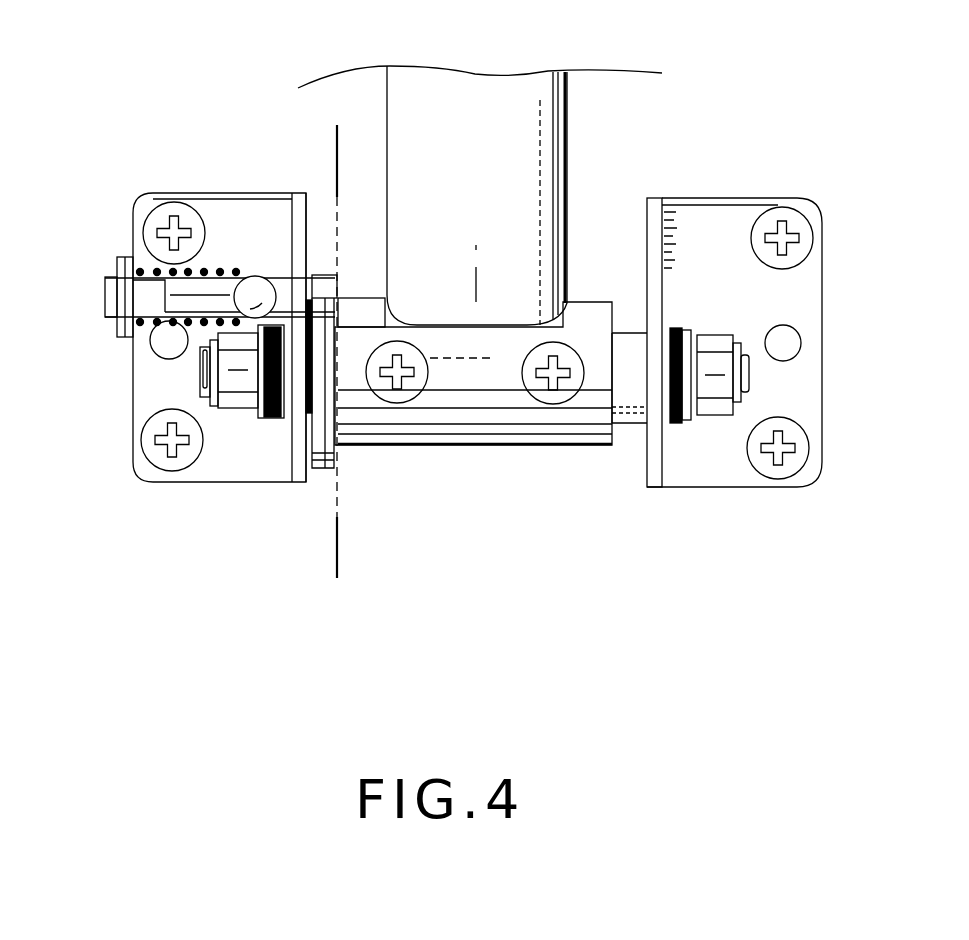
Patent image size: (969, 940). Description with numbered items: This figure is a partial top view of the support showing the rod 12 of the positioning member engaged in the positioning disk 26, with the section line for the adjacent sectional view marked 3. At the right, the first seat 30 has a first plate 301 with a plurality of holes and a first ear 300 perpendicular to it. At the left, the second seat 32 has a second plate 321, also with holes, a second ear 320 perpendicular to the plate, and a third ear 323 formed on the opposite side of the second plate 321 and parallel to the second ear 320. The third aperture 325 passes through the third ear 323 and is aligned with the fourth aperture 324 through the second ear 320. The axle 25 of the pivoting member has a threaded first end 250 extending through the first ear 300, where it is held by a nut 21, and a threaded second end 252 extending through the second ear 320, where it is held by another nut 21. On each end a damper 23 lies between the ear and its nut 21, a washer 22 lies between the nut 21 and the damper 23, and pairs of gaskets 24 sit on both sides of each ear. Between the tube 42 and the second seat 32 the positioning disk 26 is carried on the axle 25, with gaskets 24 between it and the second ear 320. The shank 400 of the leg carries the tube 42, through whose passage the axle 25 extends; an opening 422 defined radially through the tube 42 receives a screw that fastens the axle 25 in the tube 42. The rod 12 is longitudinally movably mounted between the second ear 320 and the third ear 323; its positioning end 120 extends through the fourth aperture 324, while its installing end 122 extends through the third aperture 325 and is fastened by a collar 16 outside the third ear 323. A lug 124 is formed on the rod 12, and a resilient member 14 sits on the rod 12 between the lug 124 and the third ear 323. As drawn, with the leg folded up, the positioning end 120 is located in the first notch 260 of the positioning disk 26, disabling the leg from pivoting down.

The shank 400 is at (538, 82).
The positioning end 120 is at (333, 281).
The section line 3- 3 is at (345, 547).
The second seat 32 is at (214, 186).
The second plate 321 is at (233, 195).
The second ear 320 is at (300, 193).
The third ear 323 is at (133, 340).
The rod 12 is at (272, 270).
The lug 124 is at (258, 276).
The installing end 122 is at (105, 297).
The resilient member 14 is at (126, 255).
The third aperture 325 is at (117, 262).
The collar 16 is at (120, 330).
The second end 252 is at (200, 381).
The nut 21 is at (247, 408).
The washer 22 is at (270, 420).
The damper 23 is at (290, 462).
The gaskets 24 is at (312, 468).
The fourth aperture 324 is at (330, 275).
The positioning disk 26 is at (322, 465).
The first notch 260 is at (313, 313).
The tube 42 is at (463, 444).
The opening 422 is at (548, 418).
The axle 25 is at (627, 430).
The first seat 30 is at (736, 188).
The first ear 300 is at (658, 198).
The first plate 301 is at (773, 198).
The first end 250 is at (752, 376).